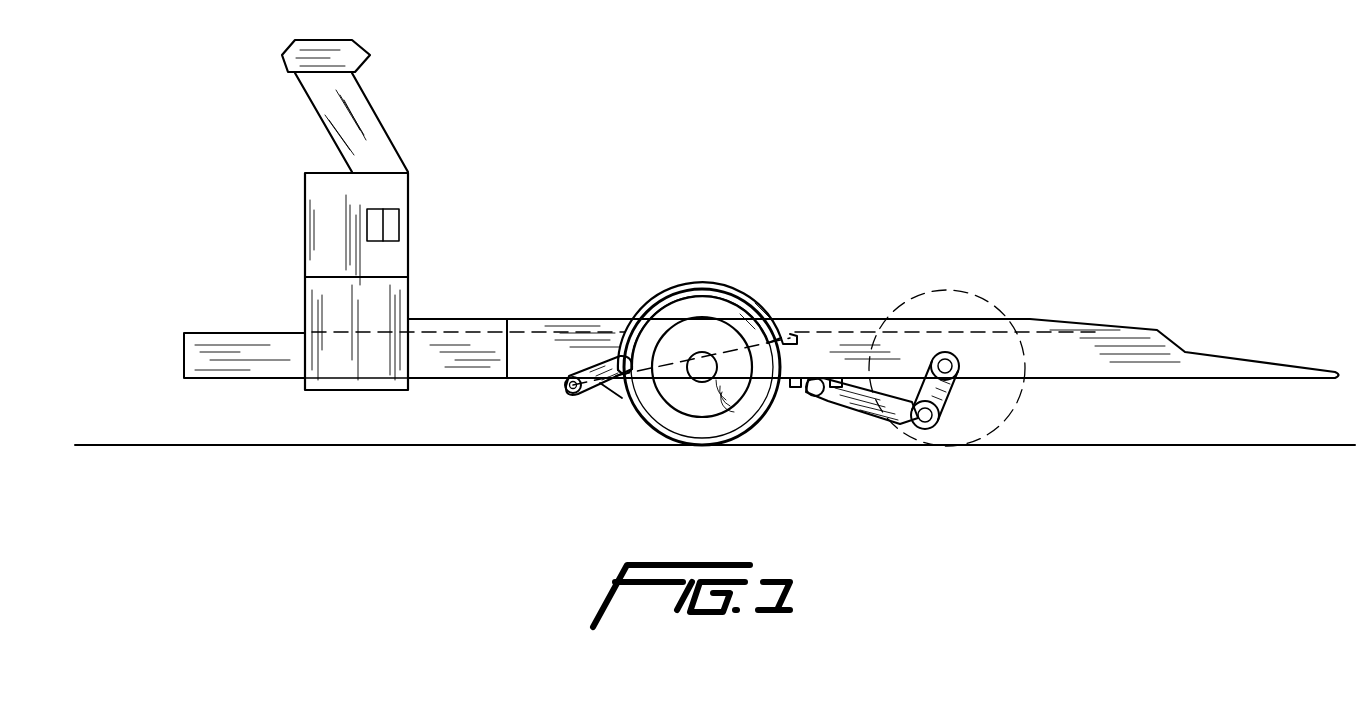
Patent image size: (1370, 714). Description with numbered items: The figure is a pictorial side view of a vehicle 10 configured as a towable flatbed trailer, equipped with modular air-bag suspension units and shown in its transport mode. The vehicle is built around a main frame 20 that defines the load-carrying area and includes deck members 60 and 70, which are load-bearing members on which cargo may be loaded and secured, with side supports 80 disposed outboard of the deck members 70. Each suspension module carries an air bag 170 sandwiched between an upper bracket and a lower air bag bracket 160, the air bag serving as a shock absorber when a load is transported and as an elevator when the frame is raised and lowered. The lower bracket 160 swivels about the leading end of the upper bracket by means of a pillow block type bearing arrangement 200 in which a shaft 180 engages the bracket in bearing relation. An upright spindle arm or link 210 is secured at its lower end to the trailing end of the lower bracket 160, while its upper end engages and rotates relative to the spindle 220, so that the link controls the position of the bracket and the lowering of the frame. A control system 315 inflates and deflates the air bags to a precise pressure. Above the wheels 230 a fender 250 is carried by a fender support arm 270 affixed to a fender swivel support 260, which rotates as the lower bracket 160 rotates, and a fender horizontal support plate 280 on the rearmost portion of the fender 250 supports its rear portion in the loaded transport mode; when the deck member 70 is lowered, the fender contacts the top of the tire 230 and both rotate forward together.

The vehicle 10 is at (670, 203).
The main frame 20 is at (230, 332).
The deck member 60 is at (430, 330).
The deck member 70 is at (468, 330).
The side support 80 is at (553, 325).
The lower air bag bracket 160 is at (866, 412).
The air bag 170 is at (918, 350).
The shaft 180 is at (566, 388).
The pillow block type bearing arrangement 200 is at (813, 396).
The upright spindle arm or link 210 is at (960, 392).
The spindle 220 is at (950, 355).
The wheel 230 is at (740, 417).
The fender 250 is at (692, 283).
The fender swivel support 260 is at (575, 395).
The fender support arm 270 is at (618, 381).
The fender horizontal support plate 280 is at (790, 335).
The control system 315 is at (296, 236).